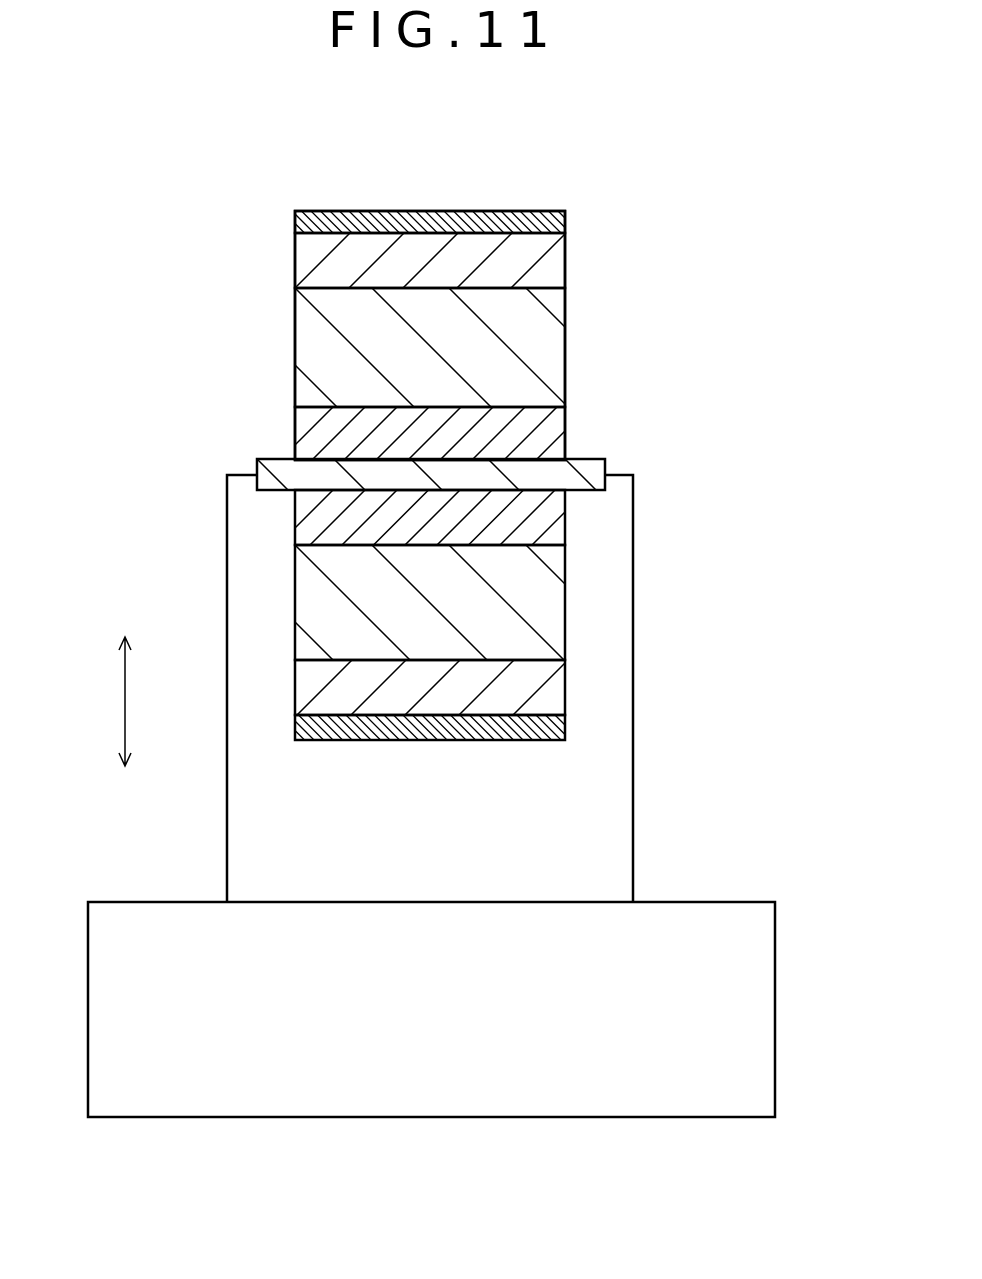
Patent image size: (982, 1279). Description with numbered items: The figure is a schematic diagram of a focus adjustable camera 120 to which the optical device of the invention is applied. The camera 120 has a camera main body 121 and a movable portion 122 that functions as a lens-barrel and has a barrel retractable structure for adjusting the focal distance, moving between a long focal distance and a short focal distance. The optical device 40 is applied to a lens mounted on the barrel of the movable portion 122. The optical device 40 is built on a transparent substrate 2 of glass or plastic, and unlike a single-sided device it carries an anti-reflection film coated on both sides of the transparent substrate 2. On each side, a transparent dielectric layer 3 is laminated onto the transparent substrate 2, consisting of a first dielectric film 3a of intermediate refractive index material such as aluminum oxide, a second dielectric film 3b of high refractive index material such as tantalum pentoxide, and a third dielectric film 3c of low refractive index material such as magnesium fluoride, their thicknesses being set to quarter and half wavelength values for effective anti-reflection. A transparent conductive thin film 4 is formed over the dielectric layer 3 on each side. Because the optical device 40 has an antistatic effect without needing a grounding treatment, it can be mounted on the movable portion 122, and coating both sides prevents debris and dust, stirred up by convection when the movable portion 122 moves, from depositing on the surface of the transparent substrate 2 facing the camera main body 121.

The camera 120 is at (192, 92).
The optical device 40 is at (253, 223).
The transparent conductive thin film 4 is at (565, 222).
The dielectric layer 3 is at (645, 247).
The first dielectric film 3a is at (565, 433).
The second dielectric film 3b is at (565, 350).
The third dielectric film 3c is at (565, 263).
The transparent substrate 2 is at (605, 466).
The movable portion 122 is at (633, 819).
The camera main body 121 is at (775, 1005).